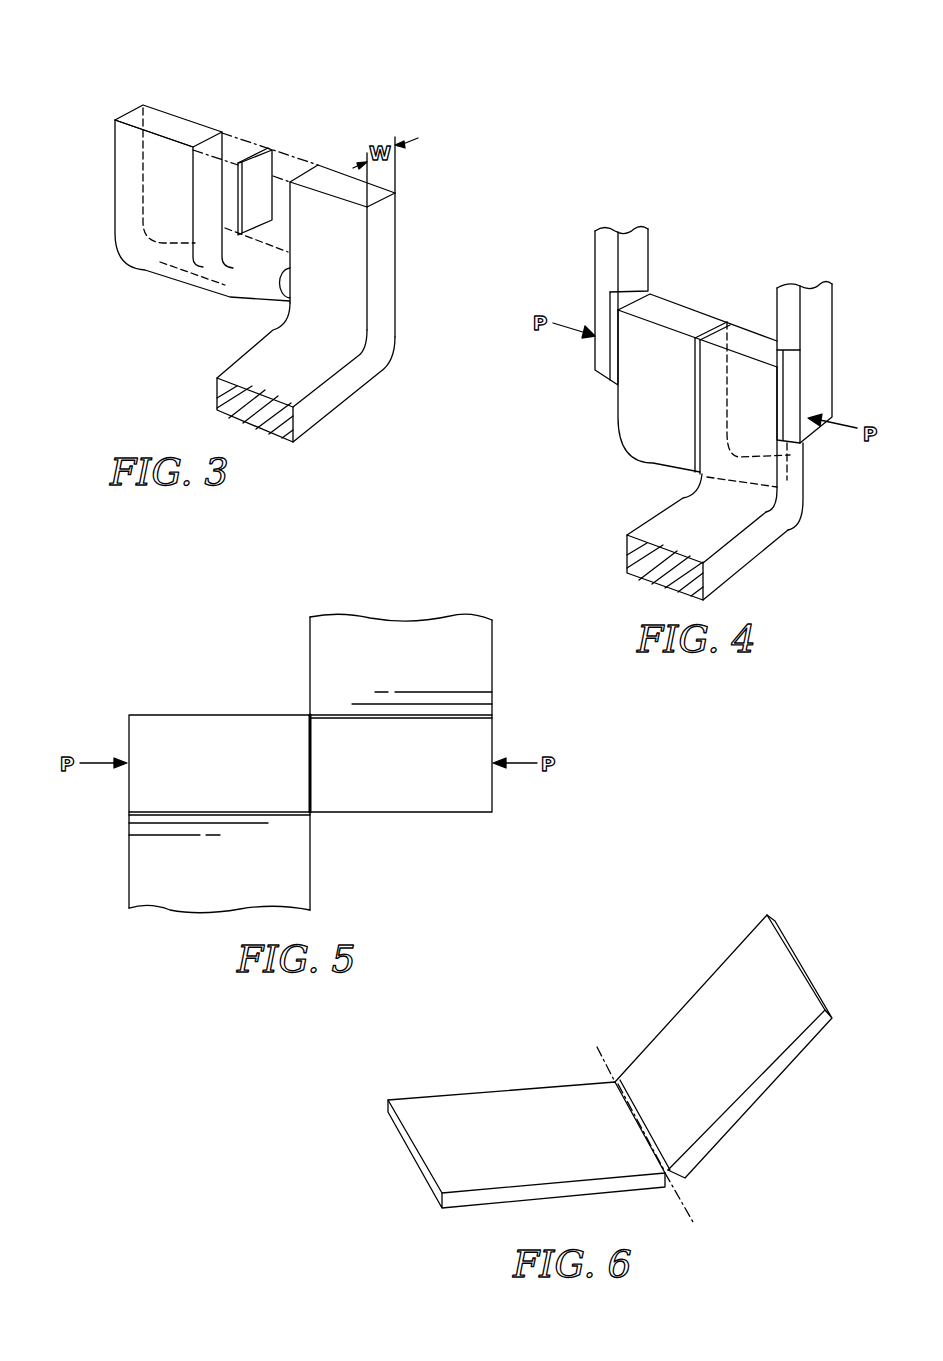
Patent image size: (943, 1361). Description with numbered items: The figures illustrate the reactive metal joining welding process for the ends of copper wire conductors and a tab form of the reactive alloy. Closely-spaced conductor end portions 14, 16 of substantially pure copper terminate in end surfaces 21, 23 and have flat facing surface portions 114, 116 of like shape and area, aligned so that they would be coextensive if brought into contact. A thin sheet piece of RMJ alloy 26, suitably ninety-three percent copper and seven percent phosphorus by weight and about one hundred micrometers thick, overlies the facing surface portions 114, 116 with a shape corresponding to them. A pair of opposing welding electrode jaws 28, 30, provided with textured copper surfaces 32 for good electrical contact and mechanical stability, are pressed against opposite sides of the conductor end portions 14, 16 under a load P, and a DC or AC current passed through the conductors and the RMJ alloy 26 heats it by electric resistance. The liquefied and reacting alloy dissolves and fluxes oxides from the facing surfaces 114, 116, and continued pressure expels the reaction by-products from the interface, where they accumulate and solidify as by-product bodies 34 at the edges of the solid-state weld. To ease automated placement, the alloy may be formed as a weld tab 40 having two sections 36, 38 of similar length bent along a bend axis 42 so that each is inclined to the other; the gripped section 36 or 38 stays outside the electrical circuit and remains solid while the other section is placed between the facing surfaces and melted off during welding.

In FIG. 3, the conductor end portion 14 is at (123, 183).
In FIG. 4, the conductor end portion 14 is at (647, 445).
In FIG. 3, the conductor end portion 16 is at (287, 358).
In FIG. 4, the conductor end portion 16 is at (690, 522).
In FIG. 3, the end surface 21 is at (162, 130).
In FIG. 5, the end surface 21 is at (207, 775).
In FIG. 3, the end surface 23 is at (332, 185).
In FIG. 5, the end surface 23 is at (389, 775).
In FIG. 3, the sheet piece of RMJ alloy 26 is at (257, 183).
In FIG. 4, the welding electrode jaw 28 is at (594, 268).
In FIG. 4, the welding electrode jaw 30 is at (817, 317).
In FIG. 4, the textured copper surfaces 32 is at (638, 295).
In FIG. 5, the by-product bodies 34 is at (308, 713).
In FIG. 6, the section 36 is at (503, 1113).
In FIG. 6, the section 38 is at (707, 1027).
In FIG. 6, the weld tab 40 is at (626, 1020).
In FIG. 6, the bend axis 42 is at (577, 1042).
In FIG. 3, the facing surface portion 114 is at (207, 243).
In FIG. 5, the facing surface portion 114 is at (307, 743).
In FIG. 3, the facing surface portion 116 is at (291, 299).
In FIG. 5, the facing surface portion 116 is at (313, 760).